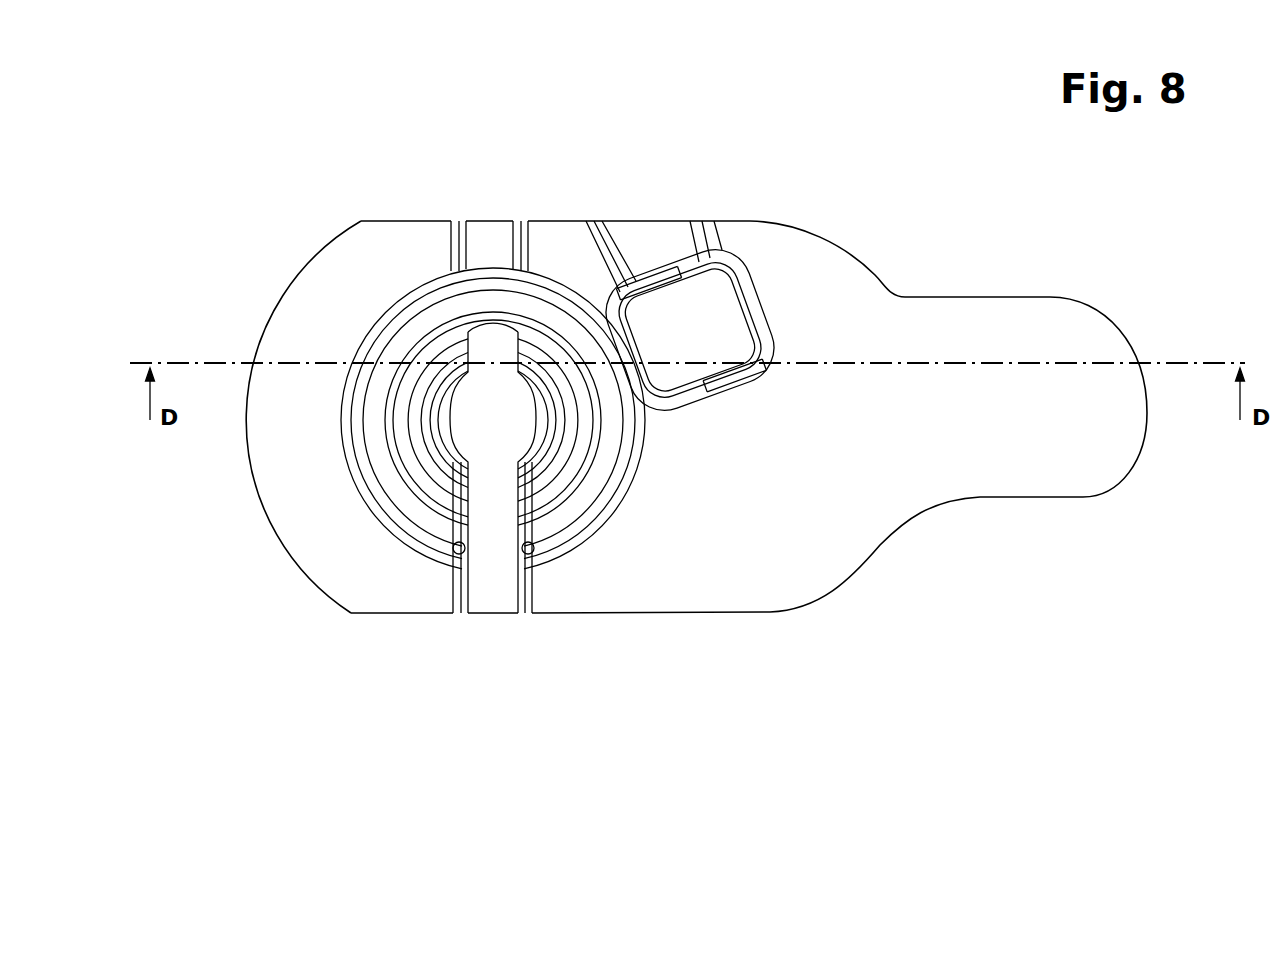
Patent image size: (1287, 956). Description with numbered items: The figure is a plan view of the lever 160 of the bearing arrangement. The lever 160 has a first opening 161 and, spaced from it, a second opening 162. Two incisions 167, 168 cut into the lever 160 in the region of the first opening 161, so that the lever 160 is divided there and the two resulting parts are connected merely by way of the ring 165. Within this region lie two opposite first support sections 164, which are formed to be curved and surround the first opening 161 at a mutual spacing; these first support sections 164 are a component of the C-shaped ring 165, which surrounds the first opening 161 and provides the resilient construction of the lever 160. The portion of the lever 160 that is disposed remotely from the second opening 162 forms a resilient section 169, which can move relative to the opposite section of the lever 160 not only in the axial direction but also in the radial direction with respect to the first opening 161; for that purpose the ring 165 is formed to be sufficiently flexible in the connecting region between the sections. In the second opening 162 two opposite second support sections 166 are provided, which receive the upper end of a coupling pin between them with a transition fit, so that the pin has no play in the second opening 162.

The lever 160 is at (270, 148).
The first opening 161 is at (482, 427).
The second opening 162 is at (728, 302).
The first support sections 164 is at (420, 421).
The ring 165 is at (438, 314).
The second support sections 166 is at (656, 277).
The incision 167 is at (489, 226).
The incision 168 is at (497, 602).
The resilient section 169 is at (300, 313).